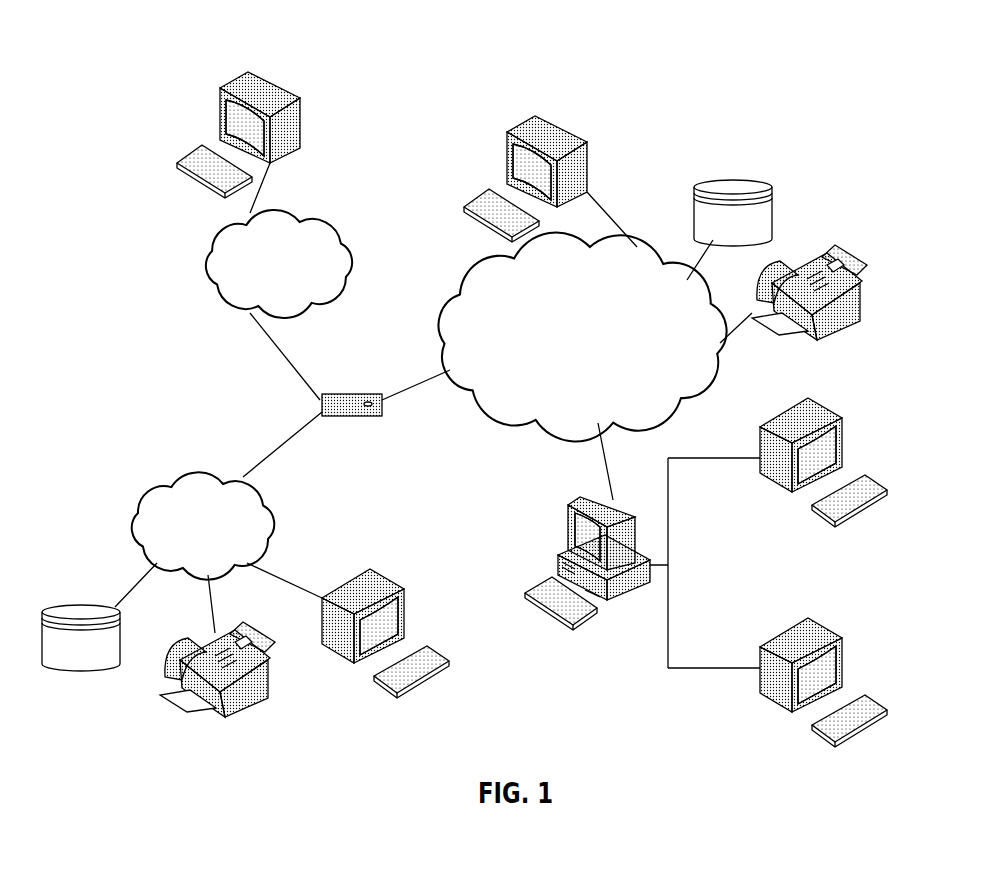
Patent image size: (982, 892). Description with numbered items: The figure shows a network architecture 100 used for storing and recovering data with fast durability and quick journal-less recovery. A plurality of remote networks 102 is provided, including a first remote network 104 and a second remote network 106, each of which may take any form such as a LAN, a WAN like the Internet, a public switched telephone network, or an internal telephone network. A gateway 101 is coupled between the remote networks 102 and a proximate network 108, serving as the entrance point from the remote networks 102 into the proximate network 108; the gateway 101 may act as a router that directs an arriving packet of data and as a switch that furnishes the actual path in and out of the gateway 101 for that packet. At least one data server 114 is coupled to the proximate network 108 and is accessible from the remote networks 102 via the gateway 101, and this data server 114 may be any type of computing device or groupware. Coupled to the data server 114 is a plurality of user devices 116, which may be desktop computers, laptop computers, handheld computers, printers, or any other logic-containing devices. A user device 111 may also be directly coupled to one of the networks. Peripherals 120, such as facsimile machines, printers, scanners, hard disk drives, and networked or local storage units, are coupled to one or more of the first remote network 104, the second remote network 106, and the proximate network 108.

The network architecture 100 is at (894, 105).
The gateway 101 is at (352, 394).
The remote networks 102 is at (160, 418).
The first remote network 104 is at (137, 499).
The second remote network 106 is at (353, 268).
The proximate network 108 is at (692, 390).
The user device 111 is at (592, 172).
The data server 114 is at (567, 527).
The user devices 116 is at (302, 122).
The peripheral 120 is at (80, 670).